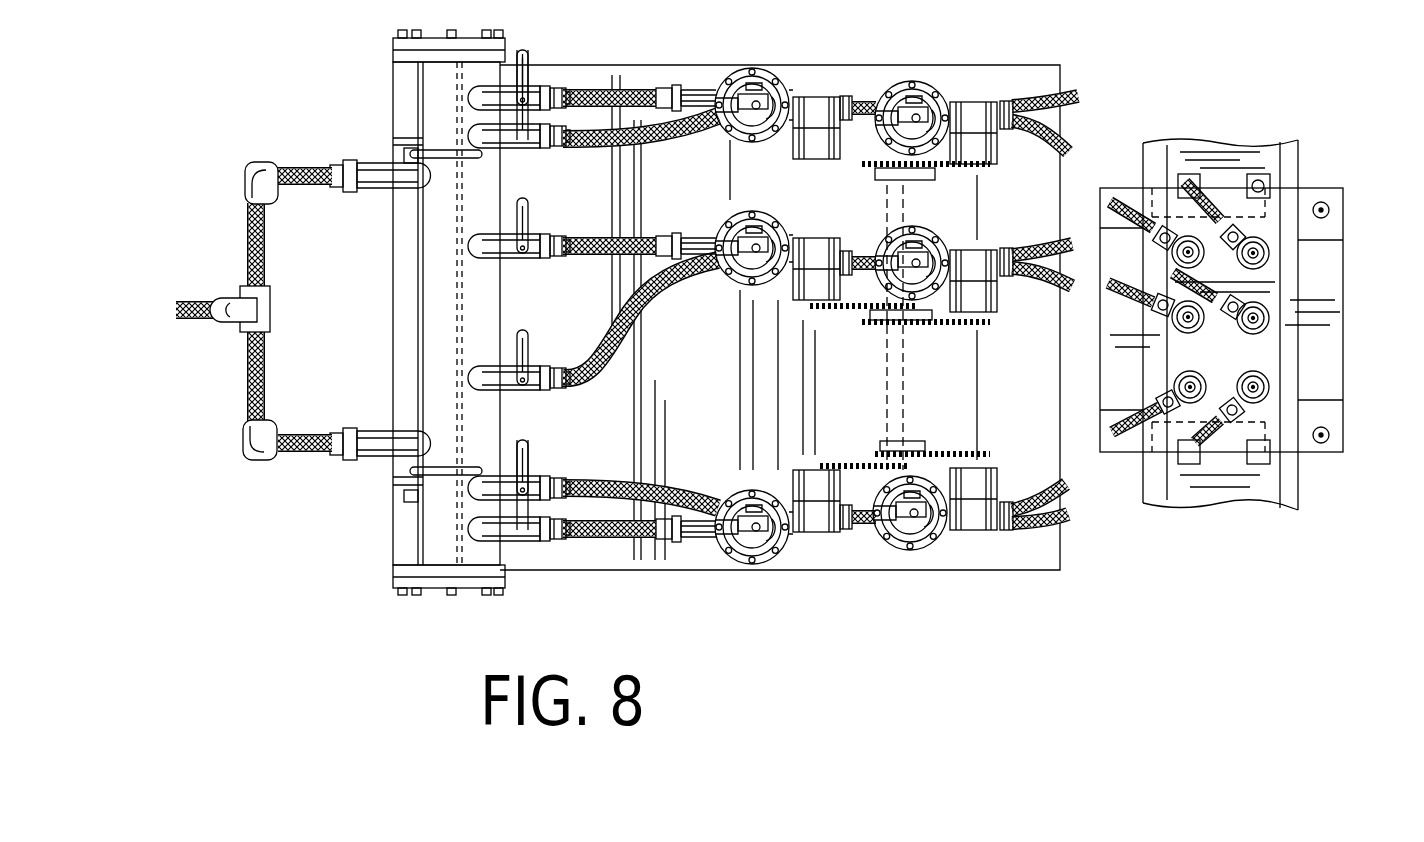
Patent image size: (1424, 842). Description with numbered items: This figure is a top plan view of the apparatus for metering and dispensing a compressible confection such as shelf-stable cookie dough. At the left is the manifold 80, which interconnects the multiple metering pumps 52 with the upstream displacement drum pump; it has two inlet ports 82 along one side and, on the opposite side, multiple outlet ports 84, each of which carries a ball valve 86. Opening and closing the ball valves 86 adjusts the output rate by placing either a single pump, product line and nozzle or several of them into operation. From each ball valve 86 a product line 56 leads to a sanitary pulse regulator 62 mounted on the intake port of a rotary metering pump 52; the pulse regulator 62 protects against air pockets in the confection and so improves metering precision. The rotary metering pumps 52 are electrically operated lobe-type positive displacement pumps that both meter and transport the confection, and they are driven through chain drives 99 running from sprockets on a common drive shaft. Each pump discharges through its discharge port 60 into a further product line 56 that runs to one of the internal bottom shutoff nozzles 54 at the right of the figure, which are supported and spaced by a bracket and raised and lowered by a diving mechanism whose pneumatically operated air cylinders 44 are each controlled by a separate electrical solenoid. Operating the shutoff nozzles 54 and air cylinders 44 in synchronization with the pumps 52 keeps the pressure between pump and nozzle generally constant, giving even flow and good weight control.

The air cylinder 44 is at (1326, 188).
The metering pump 52 is at (811, 94).
The internal bottom shutoff nozzle 54 is at (1206, 263).
The product line 56 is at (196, 298).
The discharge port 60 is at (847, 92).
The pulse regulator 62 is at (740, 70).
The manifold 80 is at (418, 93).
The inlet port 82 is at (385, 190).
The outlet port 84 is at (470, 100).
The ball valve 86 is at (534, 122).
The chain drive 99 is at (900, 327).